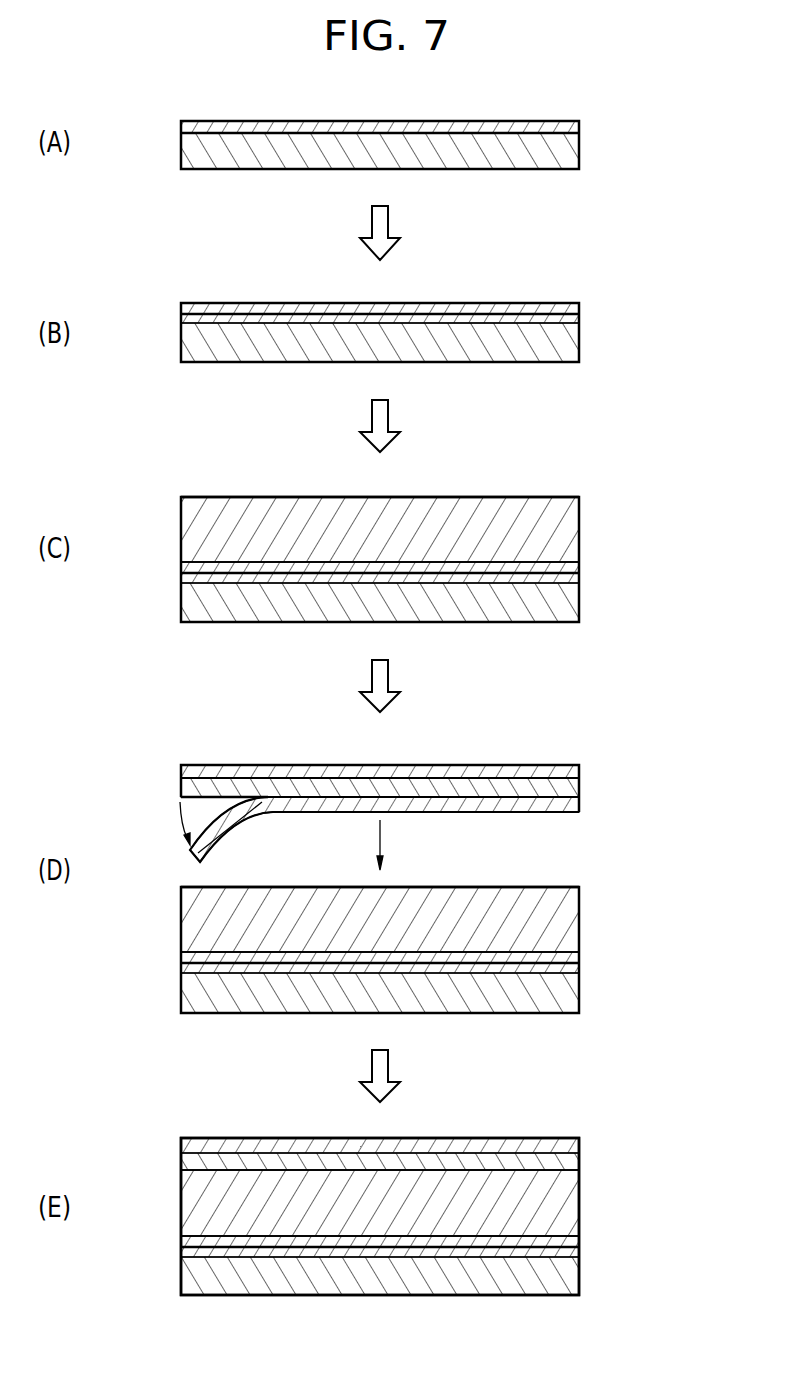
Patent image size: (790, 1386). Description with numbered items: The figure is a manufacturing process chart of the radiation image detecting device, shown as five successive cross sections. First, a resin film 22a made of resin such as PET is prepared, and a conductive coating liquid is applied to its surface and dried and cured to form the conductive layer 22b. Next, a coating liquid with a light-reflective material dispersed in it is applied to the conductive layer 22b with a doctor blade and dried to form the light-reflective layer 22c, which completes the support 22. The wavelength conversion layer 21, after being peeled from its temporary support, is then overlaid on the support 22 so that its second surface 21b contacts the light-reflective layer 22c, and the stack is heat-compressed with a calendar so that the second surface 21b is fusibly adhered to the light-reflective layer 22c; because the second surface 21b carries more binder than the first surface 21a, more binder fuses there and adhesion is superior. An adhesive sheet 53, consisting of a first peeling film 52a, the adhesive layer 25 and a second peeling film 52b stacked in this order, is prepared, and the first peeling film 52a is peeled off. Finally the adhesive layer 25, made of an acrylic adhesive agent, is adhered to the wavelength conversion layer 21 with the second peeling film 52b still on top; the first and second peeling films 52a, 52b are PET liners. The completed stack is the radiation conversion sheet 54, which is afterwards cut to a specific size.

The wavelength conversion layer 21 is at (386, 852).
The first surface 21a is at (218, 497).
The second surface 21b is at (215, 568).
The support 22 is at (443, 697).
The resin film 22a is at (568, 148).
The conductive layer 22b is at (576, 126).
The light-reflective layer 22c is at (572, 308).
The adhesive layer 25 is at (568, 787).
The first peeling film 52a is at (421, 829).
The second peeling film 52b is at (572, 772).
The adhesive sheet 53 is at (443, 954).
The radiation conversion sheet 54 is at (166, 1119).